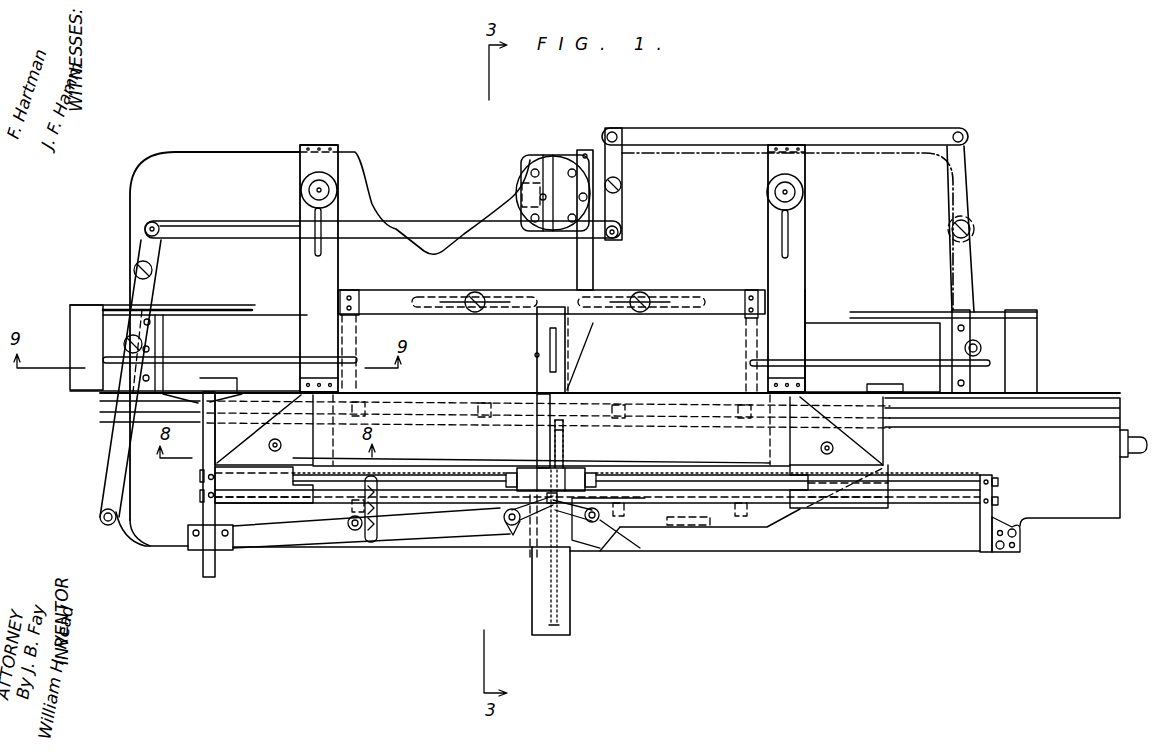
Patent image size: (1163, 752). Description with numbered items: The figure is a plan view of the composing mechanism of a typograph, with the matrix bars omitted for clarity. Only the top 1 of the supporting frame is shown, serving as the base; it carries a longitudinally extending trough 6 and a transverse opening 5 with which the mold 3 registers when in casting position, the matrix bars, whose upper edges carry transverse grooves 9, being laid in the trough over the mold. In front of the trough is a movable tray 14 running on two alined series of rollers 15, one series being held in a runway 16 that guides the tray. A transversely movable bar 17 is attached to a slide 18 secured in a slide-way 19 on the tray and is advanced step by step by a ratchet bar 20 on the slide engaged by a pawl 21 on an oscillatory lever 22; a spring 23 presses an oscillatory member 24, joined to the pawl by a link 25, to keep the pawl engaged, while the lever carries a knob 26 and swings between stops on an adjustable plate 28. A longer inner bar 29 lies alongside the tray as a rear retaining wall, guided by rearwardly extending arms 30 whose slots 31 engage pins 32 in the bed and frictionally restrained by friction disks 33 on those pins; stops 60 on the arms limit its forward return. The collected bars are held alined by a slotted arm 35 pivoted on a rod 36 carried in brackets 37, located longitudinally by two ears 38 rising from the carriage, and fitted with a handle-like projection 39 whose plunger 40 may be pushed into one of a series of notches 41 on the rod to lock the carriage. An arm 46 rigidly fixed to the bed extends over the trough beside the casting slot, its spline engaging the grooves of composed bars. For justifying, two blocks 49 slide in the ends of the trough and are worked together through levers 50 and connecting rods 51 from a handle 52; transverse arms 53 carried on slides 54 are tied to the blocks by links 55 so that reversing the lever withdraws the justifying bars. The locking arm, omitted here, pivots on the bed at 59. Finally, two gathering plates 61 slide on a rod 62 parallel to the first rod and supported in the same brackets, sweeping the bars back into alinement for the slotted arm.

The bed-plate 1 is at (200, 165).
The mold 3 is at (540, 325).
The opening 5 is at (536, 355).
The trough 6 is at (872, 341).
The transverse grooves 9 is at (610, 407).
The tray 14 is at (548, 451).
The rollers 15 is at (740, 412).
The runway 16 is at (580, 405).
The bar 17 is at (714, 478).
The slide 18 is at (572, 604).
The slide-way 19 is at (585, 530).
The ratchet bar 20 is at (556, 615).
The pawl 21 is at (600, 518).
The oscillatory lever 22 is at (445, 538).
The spring 23 is at (505, 522).
The oscillatory member 24 is at (520, 512).
The link 25 is at (533, 530).
The knob 26 is at (352, 530).
The plate 28 is at (372, 544).
The bar 29 is at (865, 388).
The arms 30 is at (296, 285).
The slots 31 is at (323, 250).
The pins 32 is at (309, 190).
The friction disks 33 is at (330, 181).
The slotted arm 35 is at (538, 438).
The rod 36 is at (946, 490).
The brackets 37 is at (205, 513).
The ears 38 is at (510, 470).
The handle-like projection 39 is at (566, 446).
The plunger 40 is at (582, 430).
The notches 41 is at (412, 473).
The arm 46 is at (563, 340).
The blocks 49 is at (157, 345).
The levers 50 is at (115, 440).
The connecting rods 51 is at (426, 232).
The handle 52 is at (100, 519).
The arms 53 is at (338, 322).
The slides 54 is at (432, 296).
The links 55 is at (232, 352).
The pivot 59 is at (525, 185).
The stops 60 is at (305, 148).
The plates 61 is at (262, 446).
The rod 62 is at (696, 506).